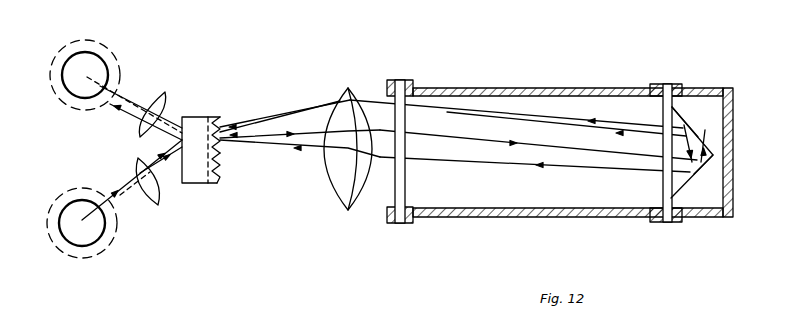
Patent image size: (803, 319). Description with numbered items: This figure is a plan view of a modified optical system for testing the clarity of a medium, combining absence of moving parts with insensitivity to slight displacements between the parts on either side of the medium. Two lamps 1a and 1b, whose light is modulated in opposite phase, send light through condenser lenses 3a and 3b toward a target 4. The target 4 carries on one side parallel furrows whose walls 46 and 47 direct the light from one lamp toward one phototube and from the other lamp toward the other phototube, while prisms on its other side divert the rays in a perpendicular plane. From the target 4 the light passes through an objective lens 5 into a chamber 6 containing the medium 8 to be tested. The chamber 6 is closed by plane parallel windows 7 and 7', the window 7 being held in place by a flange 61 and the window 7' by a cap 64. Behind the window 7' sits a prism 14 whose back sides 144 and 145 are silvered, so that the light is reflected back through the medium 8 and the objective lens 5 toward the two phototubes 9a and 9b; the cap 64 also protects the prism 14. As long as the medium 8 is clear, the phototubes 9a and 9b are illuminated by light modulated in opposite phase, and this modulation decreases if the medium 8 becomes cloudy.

The lamp 1a is at (110, 235).
The lamp 1b is at (100, 52).
The phototube 9a is at (100, 255).
The phototube 9b is at (118, 57).
The condenser lens 3a is at (157, 207).
The condenser lens 3b is at (163, 93).
The target 4 is at (210, 184).
The furrow wall 46 is at (218, 158).
The furrow wall 47 is at (216, 178).
The objective lens 5 is at (342, 205).
The chamber 6 is at (553, 217).
The window 7 is at (385, 162).
The window 7' is at (652, 165).
The medium 8 is at (490, 188).
The flange 61 is at (397, 223).
The prism 14 is at (701, 218).
The silvered back side 144 is at (696, 124).
The silvered back side 145 is at (706, 176).
The cap 64 is at (732, 213).